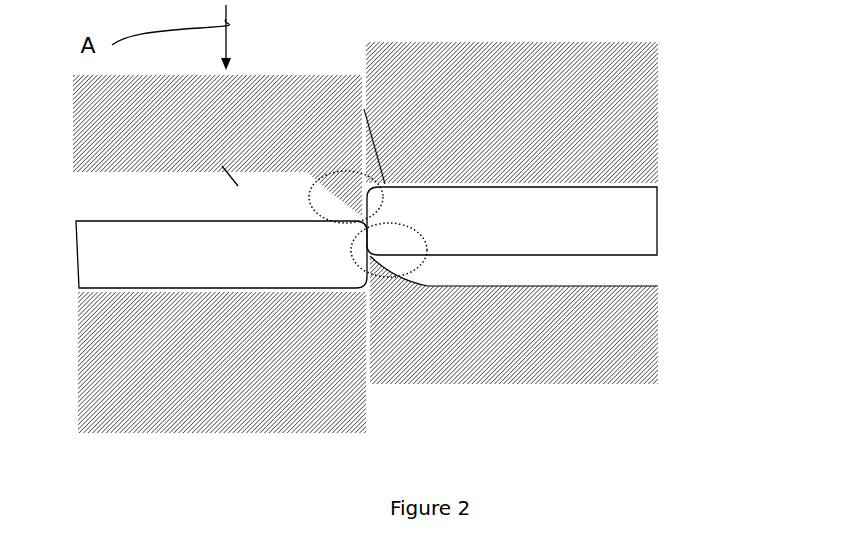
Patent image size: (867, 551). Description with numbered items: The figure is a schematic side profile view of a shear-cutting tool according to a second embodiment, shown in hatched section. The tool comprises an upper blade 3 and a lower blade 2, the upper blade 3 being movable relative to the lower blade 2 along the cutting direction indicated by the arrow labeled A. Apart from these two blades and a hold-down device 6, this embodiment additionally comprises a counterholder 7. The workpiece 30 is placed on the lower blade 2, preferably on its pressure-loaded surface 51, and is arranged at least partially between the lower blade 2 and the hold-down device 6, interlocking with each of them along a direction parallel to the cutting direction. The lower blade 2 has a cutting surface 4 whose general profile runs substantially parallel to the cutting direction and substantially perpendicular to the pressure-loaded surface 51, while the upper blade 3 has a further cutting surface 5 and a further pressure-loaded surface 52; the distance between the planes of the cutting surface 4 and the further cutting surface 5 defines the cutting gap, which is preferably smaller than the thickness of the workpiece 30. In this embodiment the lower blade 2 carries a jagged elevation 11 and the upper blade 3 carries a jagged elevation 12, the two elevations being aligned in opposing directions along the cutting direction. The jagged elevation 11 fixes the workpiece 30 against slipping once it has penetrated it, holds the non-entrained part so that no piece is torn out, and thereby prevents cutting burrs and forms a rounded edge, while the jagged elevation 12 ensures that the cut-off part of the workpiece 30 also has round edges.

The lower blade 2 is at (563, 340).
The upper blade 3 is at (125, 138).
The cutting surface 4 is at (380, 313).
The further cutting surface 5 is at (366, 110).
The hold-down device 6 is at (578, 147).
The counterholder 7 is at (335, 352).
The jagged elevation 11 is at (405, 293).
The jagged elevation 12 is at (352, 147).
The workpiece 30 is at (570, 203).
The pressure-loaded surface 51 is at (543, 283).
The further pressure-loaded surface 52 is at (222, 166).